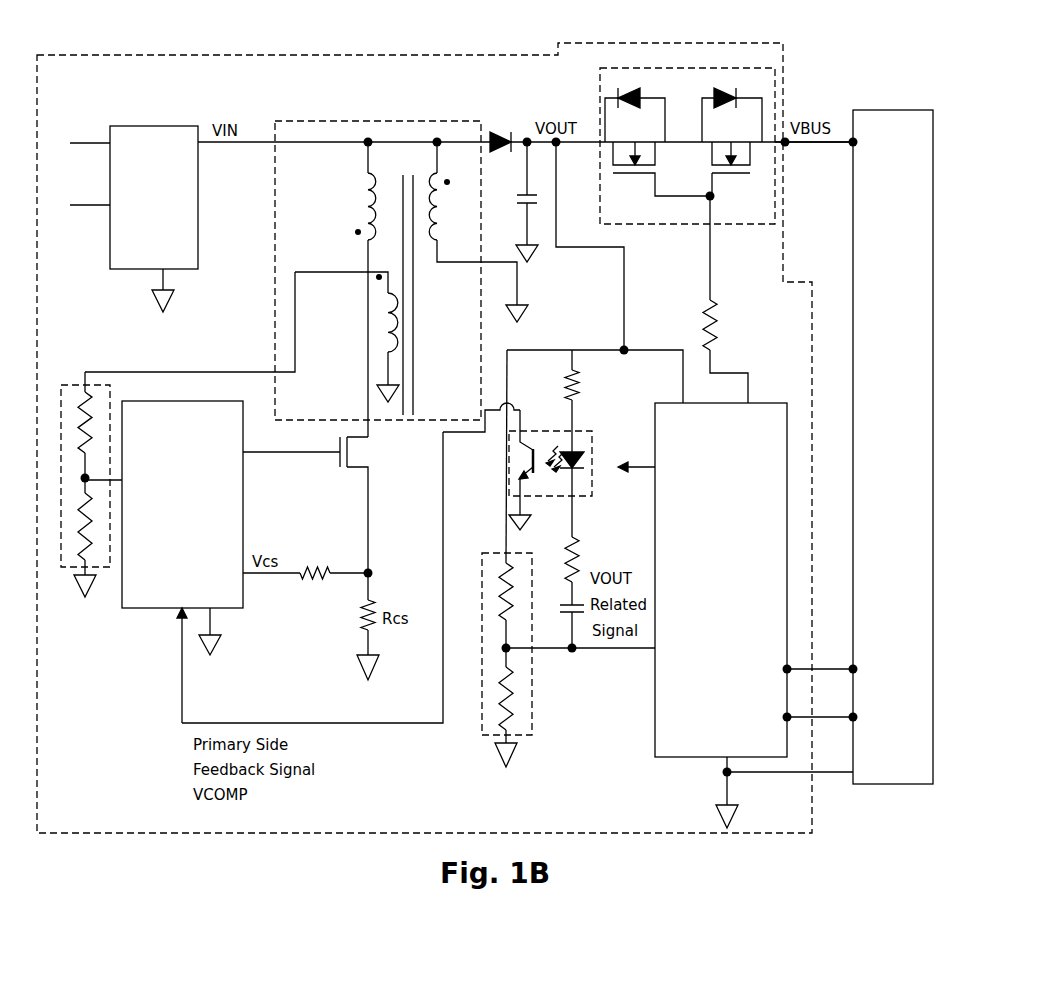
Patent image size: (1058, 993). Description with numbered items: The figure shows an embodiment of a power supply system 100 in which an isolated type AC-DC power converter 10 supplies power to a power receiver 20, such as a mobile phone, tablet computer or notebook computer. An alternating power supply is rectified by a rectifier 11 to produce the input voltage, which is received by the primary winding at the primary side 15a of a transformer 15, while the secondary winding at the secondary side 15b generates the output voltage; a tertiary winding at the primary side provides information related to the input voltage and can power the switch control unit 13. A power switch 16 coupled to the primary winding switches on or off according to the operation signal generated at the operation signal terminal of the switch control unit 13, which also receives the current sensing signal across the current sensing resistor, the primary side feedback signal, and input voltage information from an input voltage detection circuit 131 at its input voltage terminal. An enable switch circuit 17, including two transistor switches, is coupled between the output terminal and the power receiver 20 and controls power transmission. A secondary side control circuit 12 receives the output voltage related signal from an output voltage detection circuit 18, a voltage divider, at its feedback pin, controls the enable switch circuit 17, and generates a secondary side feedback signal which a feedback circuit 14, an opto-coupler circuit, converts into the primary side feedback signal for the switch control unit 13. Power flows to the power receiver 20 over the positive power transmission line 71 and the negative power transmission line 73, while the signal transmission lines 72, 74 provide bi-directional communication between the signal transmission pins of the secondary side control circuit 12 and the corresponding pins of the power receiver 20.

The power supply system 100 is at (756, 25).
The power converter 10 is at (84, 818).
The rectifier 11 is at (166, 227).
The secondary side control circuit 12 is at (730, 653).
The switch control unit 13 is at (193, 569).
The input voltage detection circuit 131 is at (61, 385).
The feedback circuit 14 is at (592, 431).
The transformer 15 is at (308, 250).
The primary side 15a is at (336, 172).
The secondary side 15b is at (452, 172).
The power switch 16 is at (363, 448).
The enable switch circuit 17 is at (762, 217).
The output voltage detection circuit 18 is at (483, 737).
The power receiver 20 is at (901, 495).
The positive power transmission line 71 is at (850, 146).
The signal transmission line 72 is at (835, 655).
The negative power transmission line 73 is at (840, 772).
The signal transmission line 74 is at (835, 703).